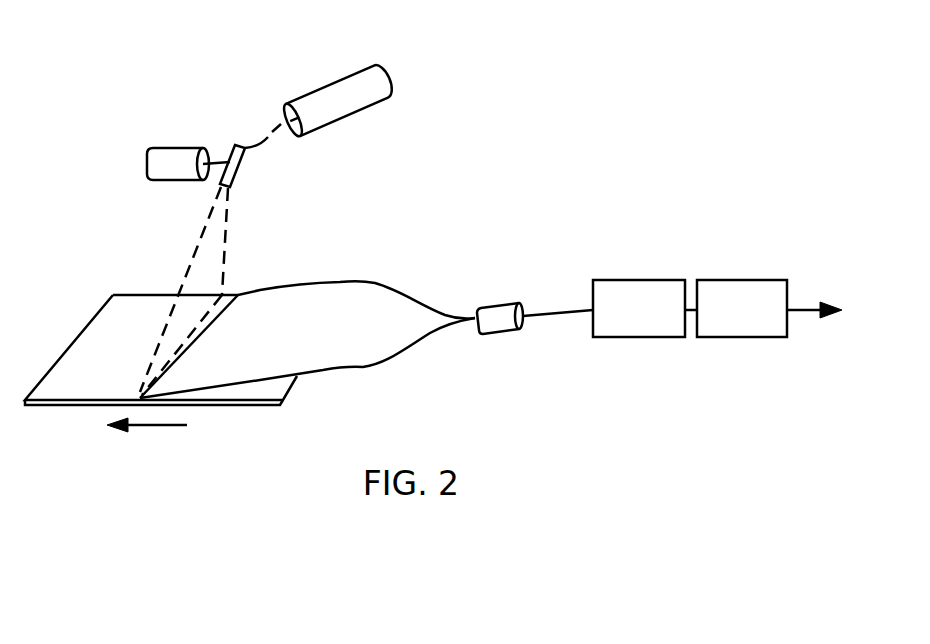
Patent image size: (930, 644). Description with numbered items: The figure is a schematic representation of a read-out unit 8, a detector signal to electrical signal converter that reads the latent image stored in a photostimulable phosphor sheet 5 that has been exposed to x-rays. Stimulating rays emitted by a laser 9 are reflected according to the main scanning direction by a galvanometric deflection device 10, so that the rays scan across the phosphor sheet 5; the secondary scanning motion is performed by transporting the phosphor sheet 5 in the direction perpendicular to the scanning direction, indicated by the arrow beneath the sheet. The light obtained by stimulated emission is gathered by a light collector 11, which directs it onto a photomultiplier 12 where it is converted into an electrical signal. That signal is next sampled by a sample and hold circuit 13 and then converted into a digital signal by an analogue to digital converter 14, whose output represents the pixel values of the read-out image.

The photostimulable phosphor sheet 5 is at (65, 407).
The read-out unit 8 is at (82, 154).
The laser 9 is at (343, 78).
The galvanometric deflection device 10 is at (235, 145).
The light collector 11 is at (318, 283).
The photomultiplier 12 is at (493, 302).
The sample and hold circuit 13 is at (637, 278).
The analogue to digital converter 14 is at (718, 278).